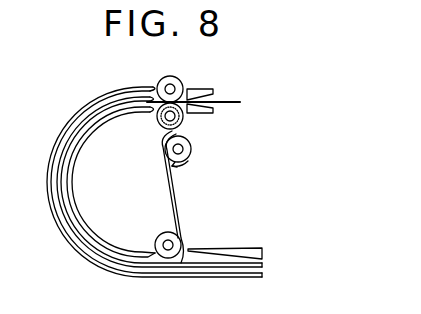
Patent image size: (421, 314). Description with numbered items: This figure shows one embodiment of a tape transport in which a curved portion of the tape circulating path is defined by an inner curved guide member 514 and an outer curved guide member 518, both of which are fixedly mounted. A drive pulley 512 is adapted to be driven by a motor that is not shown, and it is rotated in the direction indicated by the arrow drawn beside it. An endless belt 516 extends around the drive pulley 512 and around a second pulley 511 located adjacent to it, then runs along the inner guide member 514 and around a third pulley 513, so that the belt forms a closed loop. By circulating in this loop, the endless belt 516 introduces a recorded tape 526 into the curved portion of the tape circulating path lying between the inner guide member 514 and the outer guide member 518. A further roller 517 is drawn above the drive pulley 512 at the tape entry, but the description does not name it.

The second pulley 511 is at (191, 149).
The pulley 512 is at (158, 120).
The third pulley 513 is at (156, 244).
The inner curved guide member 514 is at (68, 190).
The endless belt 516 is at (178, 210).
The roller 517 is at (161, 80).
The outer curved guide member 518 is at (52, 210).
The recorded tape 526 is at (225, 100).